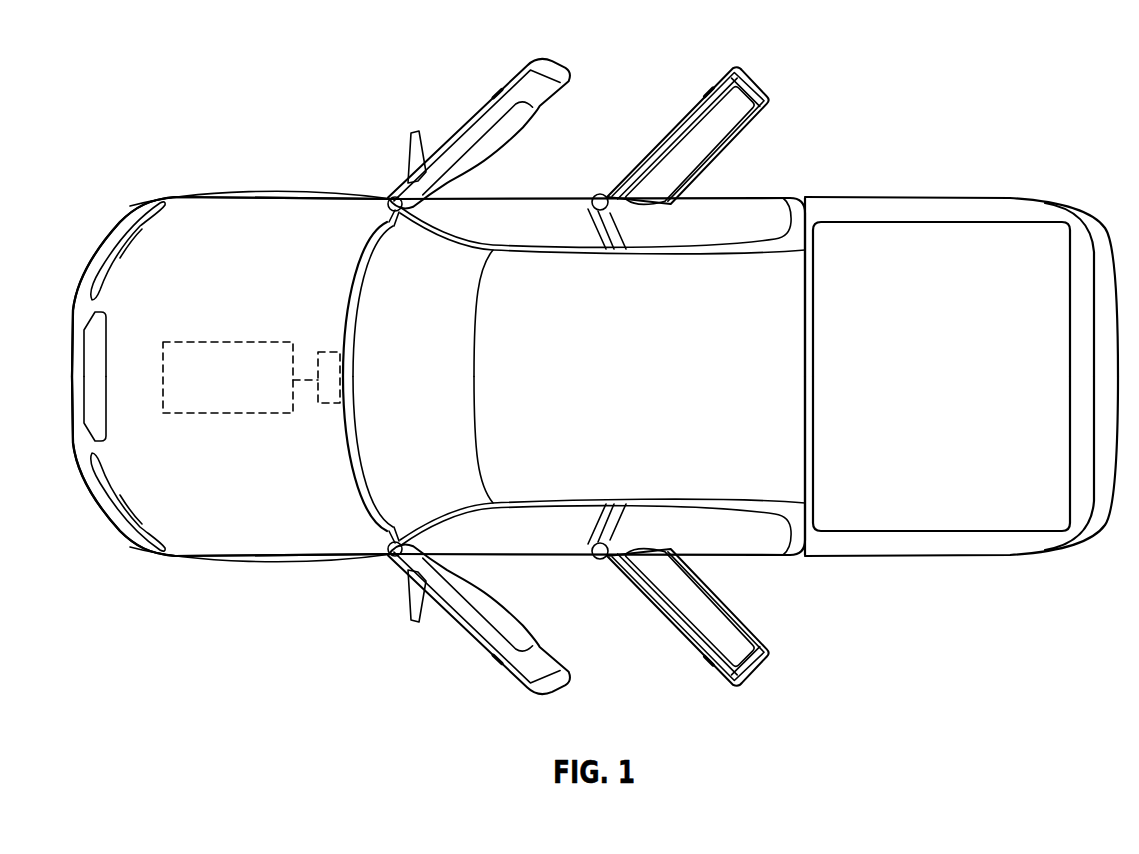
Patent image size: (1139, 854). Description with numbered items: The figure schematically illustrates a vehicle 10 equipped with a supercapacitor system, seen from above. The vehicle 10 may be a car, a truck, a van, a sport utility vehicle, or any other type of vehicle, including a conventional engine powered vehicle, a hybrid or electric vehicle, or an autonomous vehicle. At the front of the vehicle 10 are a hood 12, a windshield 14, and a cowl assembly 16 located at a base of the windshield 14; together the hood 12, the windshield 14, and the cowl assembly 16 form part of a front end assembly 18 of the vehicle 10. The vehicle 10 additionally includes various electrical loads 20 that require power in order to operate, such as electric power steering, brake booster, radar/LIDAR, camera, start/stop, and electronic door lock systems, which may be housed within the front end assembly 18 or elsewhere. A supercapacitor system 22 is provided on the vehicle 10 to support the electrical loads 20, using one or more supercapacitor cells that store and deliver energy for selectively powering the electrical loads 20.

The vehicle 10 is at (856, 132).
The hood 12 is at (193, 232).
The windshield 14 is at (412, 247).
The cowl assembly 16 is at (351, 266).
The front end assembly 18 is at (290, 162).
The electrical loads 20 is at (212, 417).
The supercapacitor system 22 is at (317, 423).